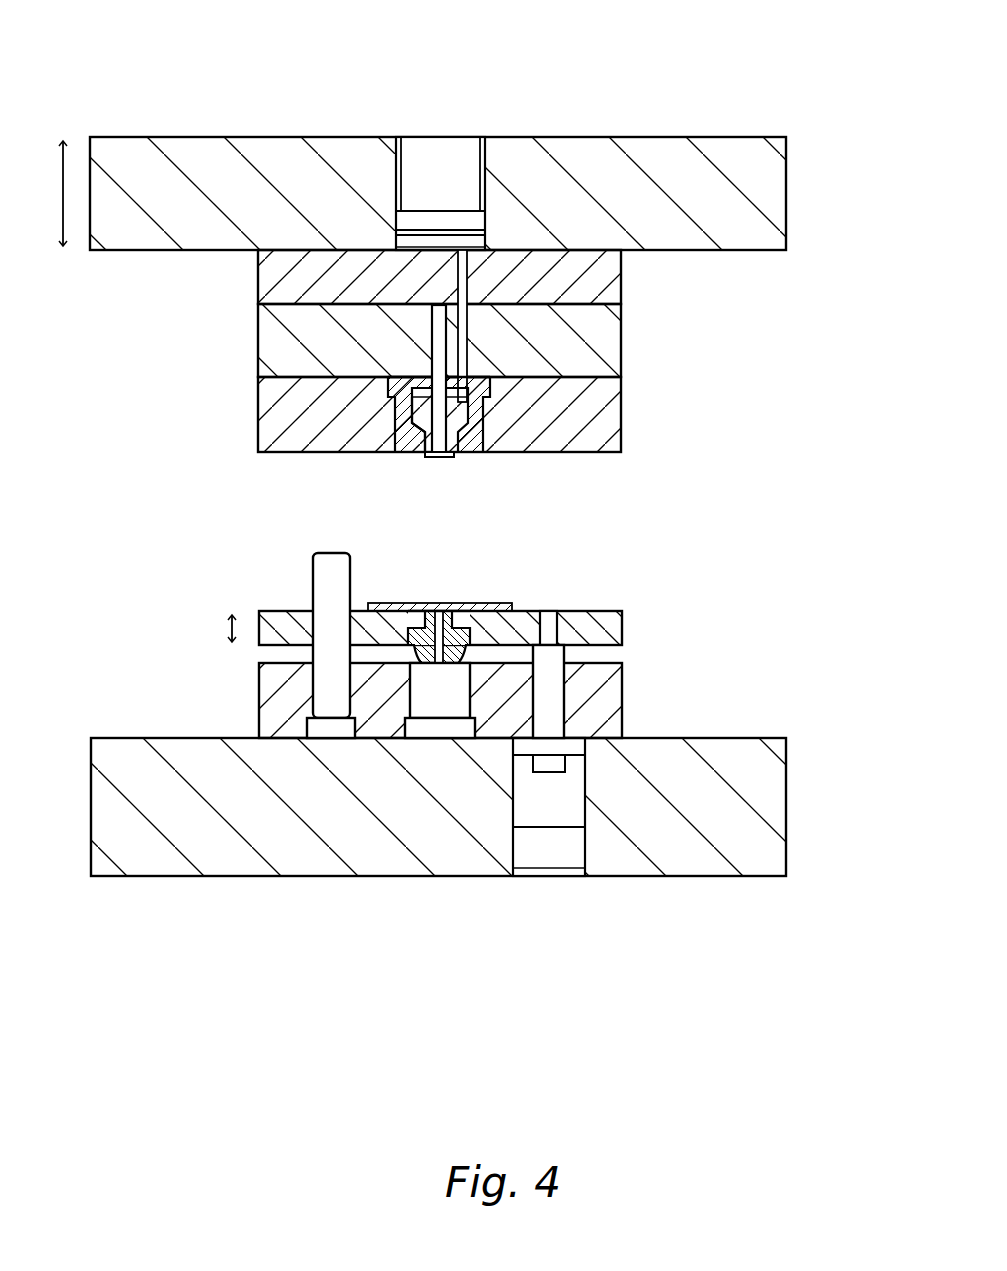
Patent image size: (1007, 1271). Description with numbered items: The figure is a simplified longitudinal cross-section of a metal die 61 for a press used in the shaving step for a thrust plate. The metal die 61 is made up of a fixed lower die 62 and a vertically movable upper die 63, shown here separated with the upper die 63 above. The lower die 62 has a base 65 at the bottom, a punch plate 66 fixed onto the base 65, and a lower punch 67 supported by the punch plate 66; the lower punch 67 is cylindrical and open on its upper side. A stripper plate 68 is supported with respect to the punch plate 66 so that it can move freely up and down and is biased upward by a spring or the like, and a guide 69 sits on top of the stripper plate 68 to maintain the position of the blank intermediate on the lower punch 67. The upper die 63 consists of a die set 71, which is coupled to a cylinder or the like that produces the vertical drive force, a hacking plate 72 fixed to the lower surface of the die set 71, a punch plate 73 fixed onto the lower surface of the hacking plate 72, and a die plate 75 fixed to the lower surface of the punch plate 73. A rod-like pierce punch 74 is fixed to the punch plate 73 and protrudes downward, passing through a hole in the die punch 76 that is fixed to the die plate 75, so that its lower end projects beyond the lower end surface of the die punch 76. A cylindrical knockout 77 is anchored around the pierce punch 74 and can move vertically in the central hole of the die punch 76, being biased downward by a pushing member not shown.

The metal die 61 is at (463, 265).
The lower die 62 is at (475, 736).
The upper die 63 is at (142, 279).
The base 65 is at (768, 820).
The punch plate 66 is at (608, 697).
The lower punch 67 is at (425, 688).
The stripper plate 68 is at (622, 625).
The guide 69 is at (483, 609).
The die set 71 is at (768, 210).
The hacking plate 72 is at (622, 270).
The punch plate 73 is at (622, 345).
The pierce punch 74 is at (436, 333).
The die plate 75 is at (622, 405).
The die punch 76 is at (472, 437).
The knockout 77 is at (425, 410).